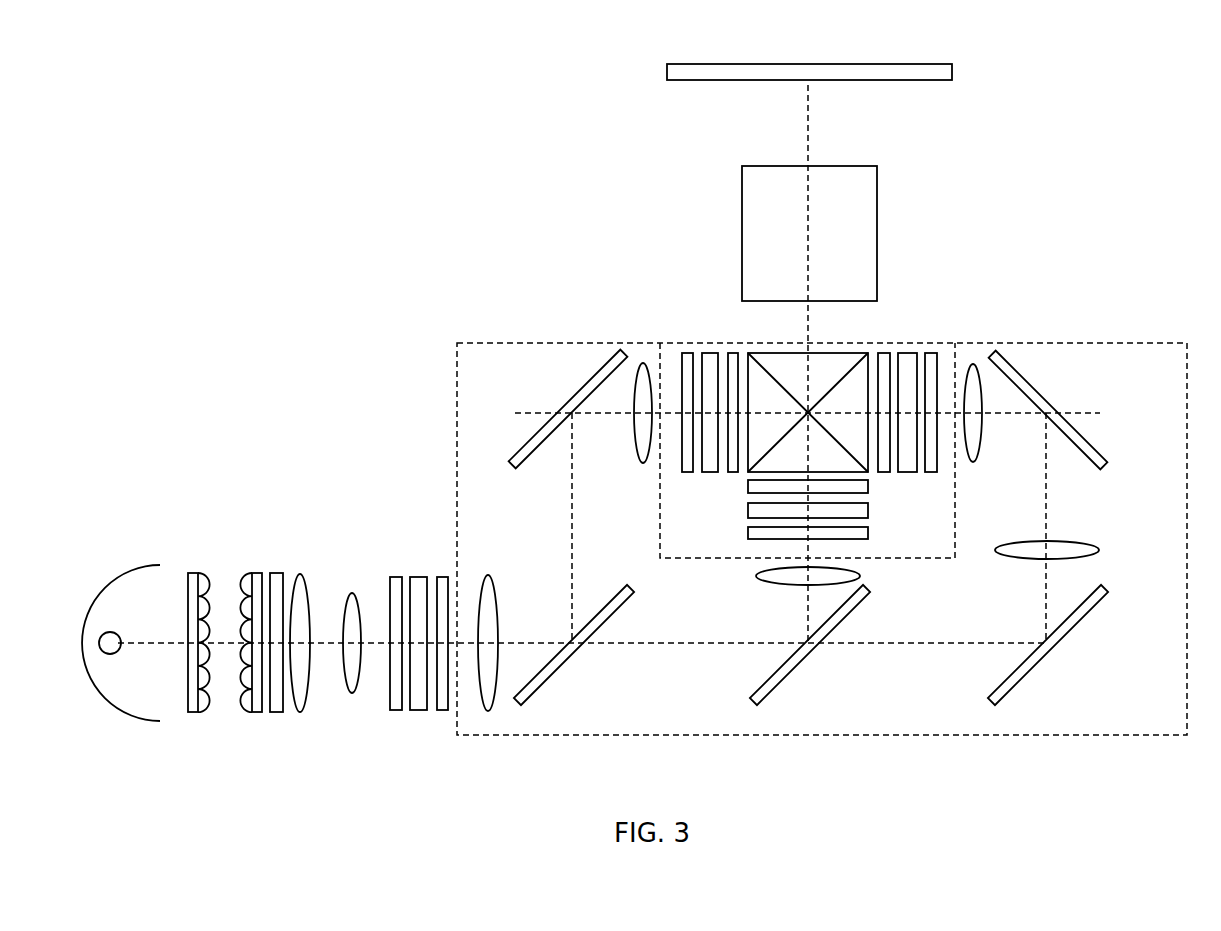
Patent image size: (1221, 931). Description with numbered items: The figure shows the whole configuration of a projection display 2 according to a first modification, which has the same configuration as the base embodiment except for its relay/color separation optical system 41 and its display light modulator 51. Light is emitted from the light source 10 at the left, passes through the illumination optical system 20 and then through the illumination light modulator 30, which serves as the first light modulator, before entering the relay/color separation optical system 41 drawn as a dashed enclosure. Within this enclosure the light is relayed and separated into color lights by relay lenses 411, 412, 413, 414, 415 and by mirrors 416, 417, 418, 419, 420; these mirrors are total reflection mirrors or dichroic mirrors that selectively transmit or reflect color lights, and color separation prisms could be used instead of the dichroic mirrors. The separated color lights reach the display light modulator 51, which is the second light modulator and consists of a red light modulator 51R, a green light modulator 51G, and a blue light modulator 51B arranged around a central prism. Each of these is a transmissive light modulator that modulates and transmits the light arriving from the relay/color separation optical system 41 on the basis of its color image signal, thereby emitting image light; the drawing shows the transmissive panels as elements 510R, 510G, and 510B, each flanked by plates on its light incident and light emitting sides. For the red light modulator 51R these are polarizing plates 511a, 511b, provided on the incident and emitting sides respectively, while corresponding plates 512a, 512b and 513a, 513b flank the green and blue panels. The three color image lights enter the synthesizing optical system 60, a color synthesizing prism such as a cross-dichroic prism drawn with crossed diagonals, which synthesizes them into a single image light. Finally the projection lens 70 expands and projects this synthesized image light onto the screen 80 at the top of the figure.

The projection display 2 is at (340, 185).
The light source 10 is at (126, 558).
The illumination optical system 20 is at (188, 548).
The illumination light modulator 30 is at (390, 548).
The relay/color separation optical system 41 is at (457, 380).
The relay lens 411 is at (489, 574).
The relay lens 412 is at (1102, 550).
The relay lens 413 is at (975, 463).
The relay lens 414 is at (862, 573).
The relay lens 415 is at (642, 466).
The mirror 416 is at (556, 672).
The mirror 417 is at (794, 672).
The mirror 418 is at (1028, 678).
The mirror 419 is at (1084, 440).
The mirror 420 is at (536, 438).
The display light modulator 51 is at (809, 484).
The blue light modulator 51B is at (604, 358).
The red light modulator 51R is at (1013, 358).
The green light modulator 51G is at (723, 602).
The blue liquid crystal panel 510B is at (710, 353).
The red liquid crystal panel 510R is at (907, 353).
The green liquid crystal panel 510G is at (748, 510).
The incident-side polarizing plate (blue) 513a is at (687, 353).
The exit-side polarizing plate (blue) 513b is at (733, 353).
The polarizing plate 511a is at (931, 353).
The polarizing plate 511b is at (884, 353).
The incident-side polarizing plate (green) 512a is at (748, 486).
The exit-side polarizing plate (green) 512b is at (788, 604).
The synthesizing optical system 60 is at (818, 352).
The projection lens 70 is at (877, 231).
The screen 80 is at (952, 72).